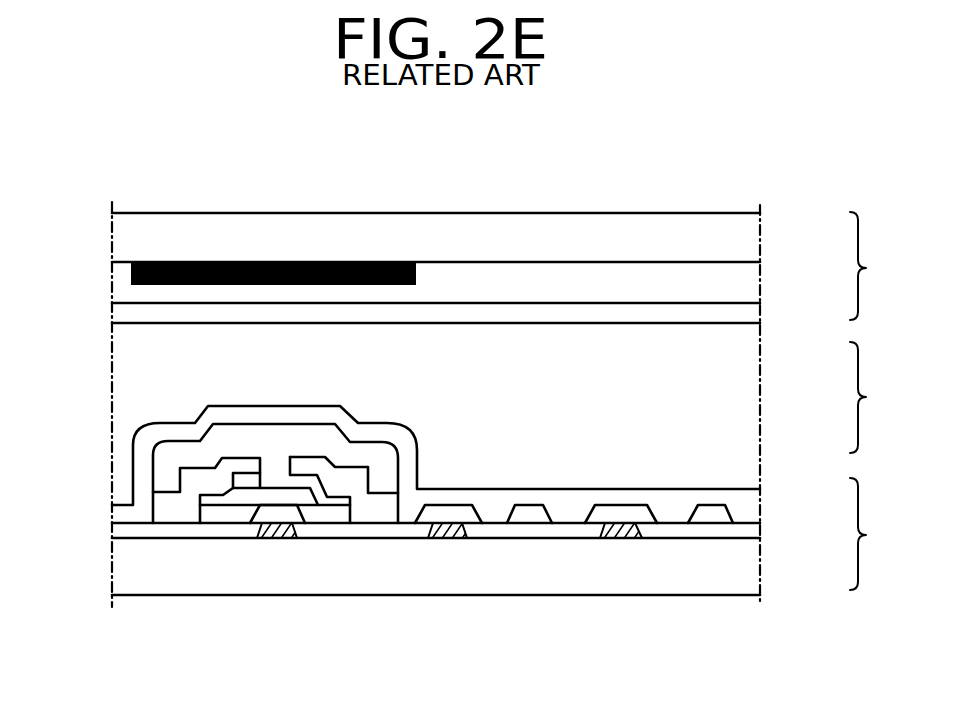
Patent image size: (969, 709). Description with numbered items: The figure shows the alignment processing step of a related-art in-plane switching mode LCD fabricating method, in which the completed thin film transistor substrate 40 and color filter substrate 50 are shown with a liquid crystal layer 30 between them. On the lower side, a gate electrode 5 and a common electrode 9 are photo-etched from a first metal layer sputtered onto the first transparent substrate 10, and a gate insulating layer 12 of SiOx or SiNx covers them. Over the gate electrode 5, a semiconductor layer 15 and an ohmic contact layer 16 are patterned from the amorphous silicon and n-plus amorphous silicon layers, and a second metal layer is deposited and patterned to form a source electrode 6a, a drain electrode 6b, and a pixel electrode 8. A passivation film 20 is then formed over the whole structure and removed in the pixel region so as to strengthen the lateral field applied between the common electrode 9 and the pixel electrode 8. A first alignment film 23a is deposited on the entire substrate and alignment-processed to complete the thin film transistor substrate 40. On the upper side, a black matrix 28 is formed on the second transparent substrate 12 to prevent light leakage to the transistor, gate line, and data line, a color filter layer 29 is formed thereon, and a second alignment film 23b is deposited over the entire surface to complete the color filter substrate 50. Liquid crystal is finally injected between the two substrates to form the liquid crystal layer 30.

The black matrix 28 is at (296, 262).
The gate insulating layer / second transparent substrate 12 is at (760, 233).
The color filter layer 29 is at (760, 276).
The second alignment film 23b is at (760, 313).
The color filter substrate 50 is at (873, 266).
The liquid crystal layer 30 is at (873, 397).
The thin film transistor substrate 40 is at (873, 534).
The first transparent substrate 10 is at (760, 578).
The first alignment film 23a is at (760, 495).
The passivation film 20 is at (220, 438).
The ohmic contact layer 16 is at (230, 490).
The source electrode 6a is at (172, 513).
The drain electrode 6b is at (382, 513).
The semiconductor layer 15 is at (335, 513).
The gate electrode 5 is at (273, 538).
The common electrode 9 is at (447, 538).
The pixel electrode 8 is at (528, 505).